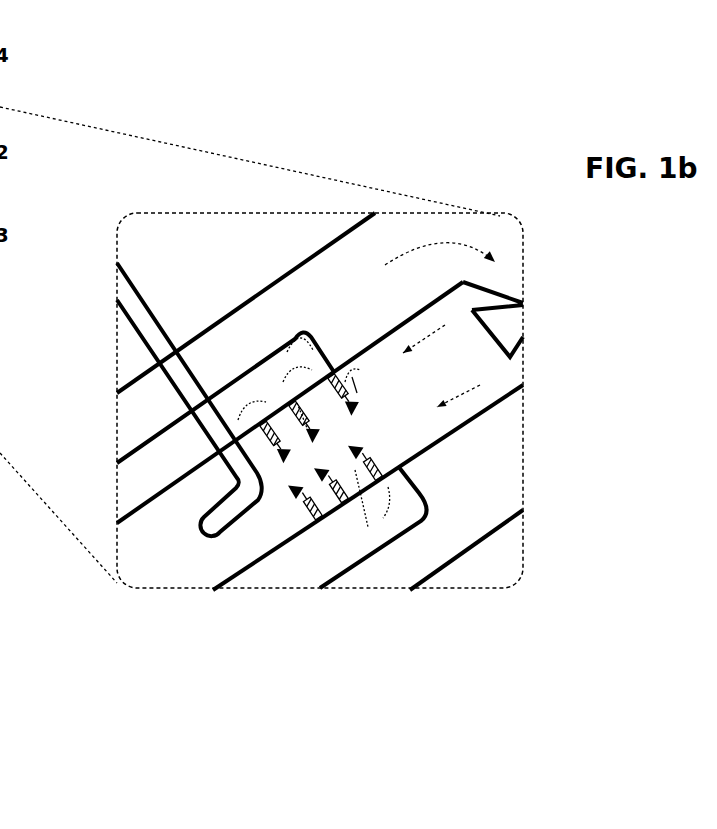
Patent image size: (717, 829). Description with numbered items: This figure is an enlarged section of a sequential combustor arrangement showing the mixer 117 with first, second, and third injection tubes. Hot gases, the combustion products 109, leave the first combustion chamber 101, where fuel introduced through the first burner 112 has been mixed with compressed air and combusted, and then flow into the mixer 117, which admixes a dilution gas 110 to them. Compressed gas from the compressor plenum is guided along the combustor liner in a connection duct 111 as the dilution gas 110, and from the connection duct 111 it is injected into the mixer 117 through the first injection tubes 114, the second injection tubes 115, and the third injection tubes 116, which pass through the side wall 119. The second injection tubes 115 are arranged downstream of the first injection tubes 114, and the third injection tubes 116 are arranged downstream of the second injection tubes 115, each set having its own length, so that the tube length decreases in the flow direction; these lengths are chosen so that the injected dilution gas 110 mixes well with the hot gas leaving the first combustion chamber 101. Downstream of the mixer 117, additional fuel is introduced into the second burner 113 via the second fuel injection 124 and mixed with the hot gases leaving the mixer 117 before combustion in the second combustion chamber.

The first combustion chamber 101 is at (418, 385).
The combustion products 109 is at (427, 336).
The dilution gas 110 is at (300, 567).
The connection duct 111 is at (155, 462).
The first burner 112 is at (513, 322).
The second burner 113 is at (160, 563).
The first injection tube 114 is at (264, 418).
The second injection tube 115 is at (289, 400).
The third injection tube 116 is at (335, 365).
The mixer 117 is at (370, 528).
The side wall 119 is at (313, 525).
The second fuel injection 124 is at (148, 330).